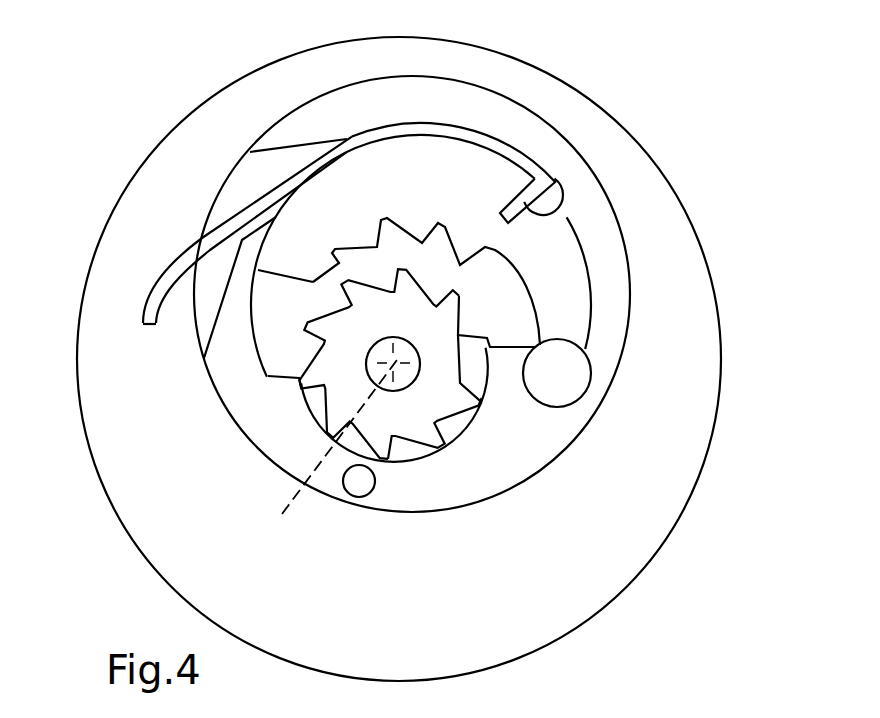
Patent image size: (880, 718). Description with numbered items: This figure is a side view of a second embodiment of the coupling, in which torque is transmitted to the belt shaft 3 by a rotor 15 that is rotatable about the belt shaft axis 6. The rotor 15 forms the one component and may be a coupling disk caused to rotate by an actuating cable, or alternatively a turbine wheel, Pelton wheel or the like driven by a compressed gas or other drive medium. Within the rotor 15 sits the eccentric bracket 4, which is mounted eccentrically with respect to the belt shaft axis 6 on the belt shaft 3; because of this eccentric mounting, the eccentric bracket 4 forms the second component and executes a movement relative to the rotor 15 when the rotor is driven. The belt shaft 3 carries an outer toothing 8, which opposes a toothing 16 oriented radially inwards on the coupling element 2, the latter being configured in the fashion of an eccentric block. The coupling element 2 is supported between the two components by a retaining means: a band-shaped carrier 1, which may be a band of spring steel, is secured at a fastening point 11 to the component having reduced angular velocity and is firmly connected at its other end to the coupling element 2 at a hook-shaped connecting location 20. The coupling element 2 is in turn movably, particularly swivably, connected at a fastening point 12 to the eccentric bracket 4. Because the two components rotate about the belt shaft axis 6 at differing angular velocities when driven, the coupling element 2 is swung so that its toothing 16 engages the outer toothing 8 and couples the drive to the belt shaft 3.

The band-shaped carrier 1 is at (200, 240).
The coupling element 2 is at (477, 160).
The belt shaft 3 is at (412, 378).
The eccentric bracket 4 is at (520, 440).
The belt shaft axis 6 is at (331, 453).
The outer toothing 8 is at (452, 305).
The fastening point 11 is at (142, 318).
The fastening point 12 is at (583, 351).
The rotor 15 is at (118, 378).
The toothing 16 is at (418, 230).
The connecting location 20 is at (555, 179).